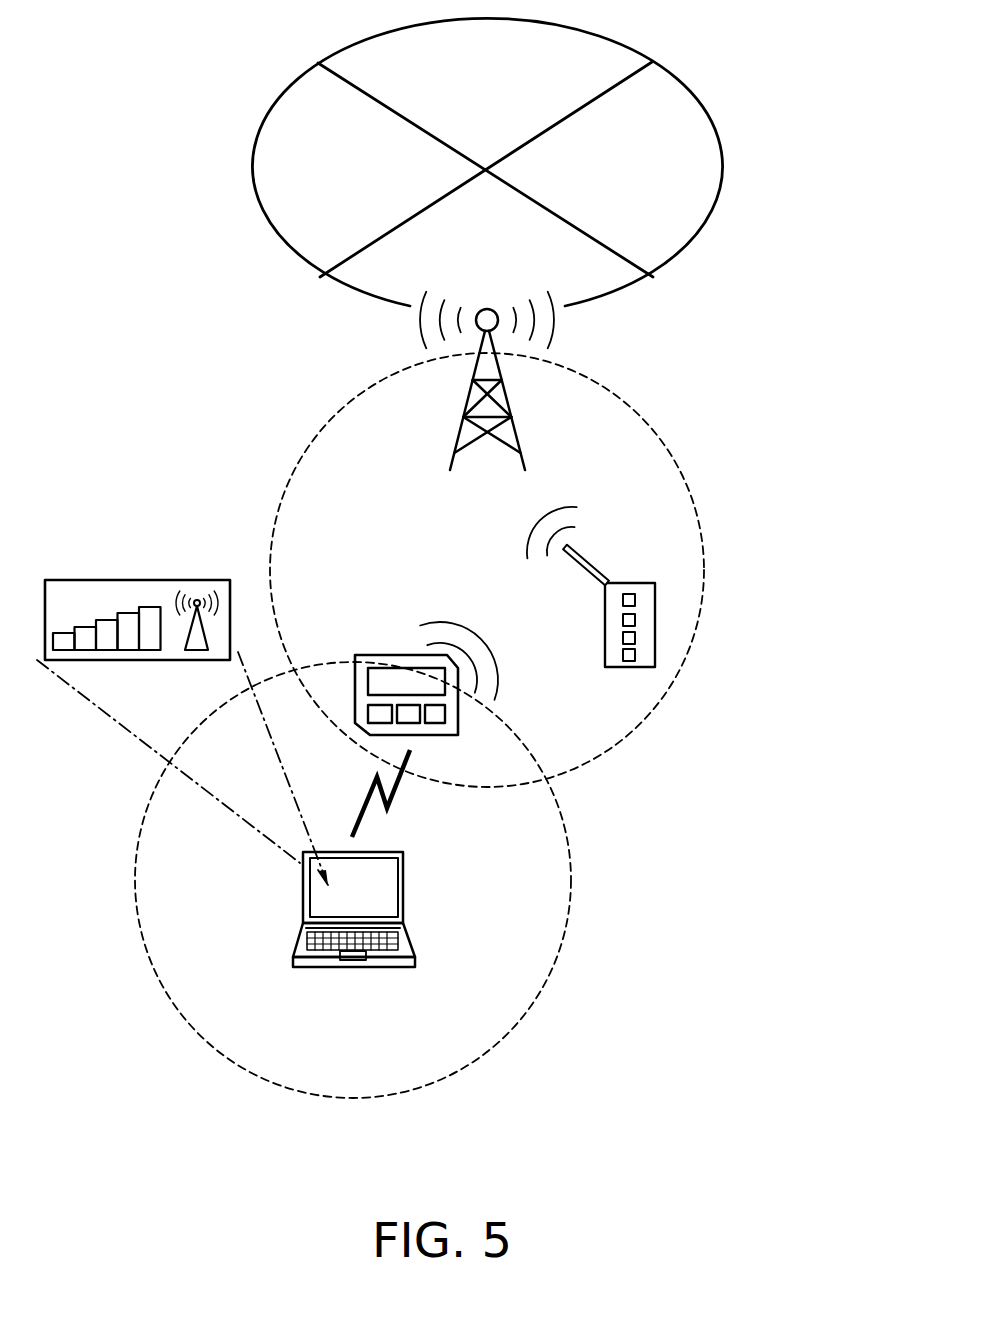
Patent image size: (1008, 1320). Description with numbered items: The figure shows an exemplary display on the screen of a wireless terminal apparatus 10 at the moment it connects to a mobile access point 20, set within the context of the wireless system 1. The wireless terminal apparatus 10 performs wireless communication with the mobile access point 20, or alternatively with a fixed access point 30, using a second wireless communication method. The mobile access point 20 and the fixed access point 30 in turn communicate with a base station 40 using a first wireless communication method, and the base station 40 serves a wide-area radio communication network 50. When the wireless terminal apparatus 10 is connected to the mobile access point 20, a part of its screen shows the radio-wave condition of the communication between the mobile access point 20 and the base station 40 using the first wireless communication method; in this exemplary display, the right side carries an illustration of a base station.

The wireless system 1 is at (443, 549).
The wireless terminal apparatus 10 is at (403, 883).
The mobile access point 20 is at (374, 655).
The fixed access point 30 is at (605, 623).
The base station 40 is at (517, 435).
The wide-area radio communication network 50 is at (722, 174).